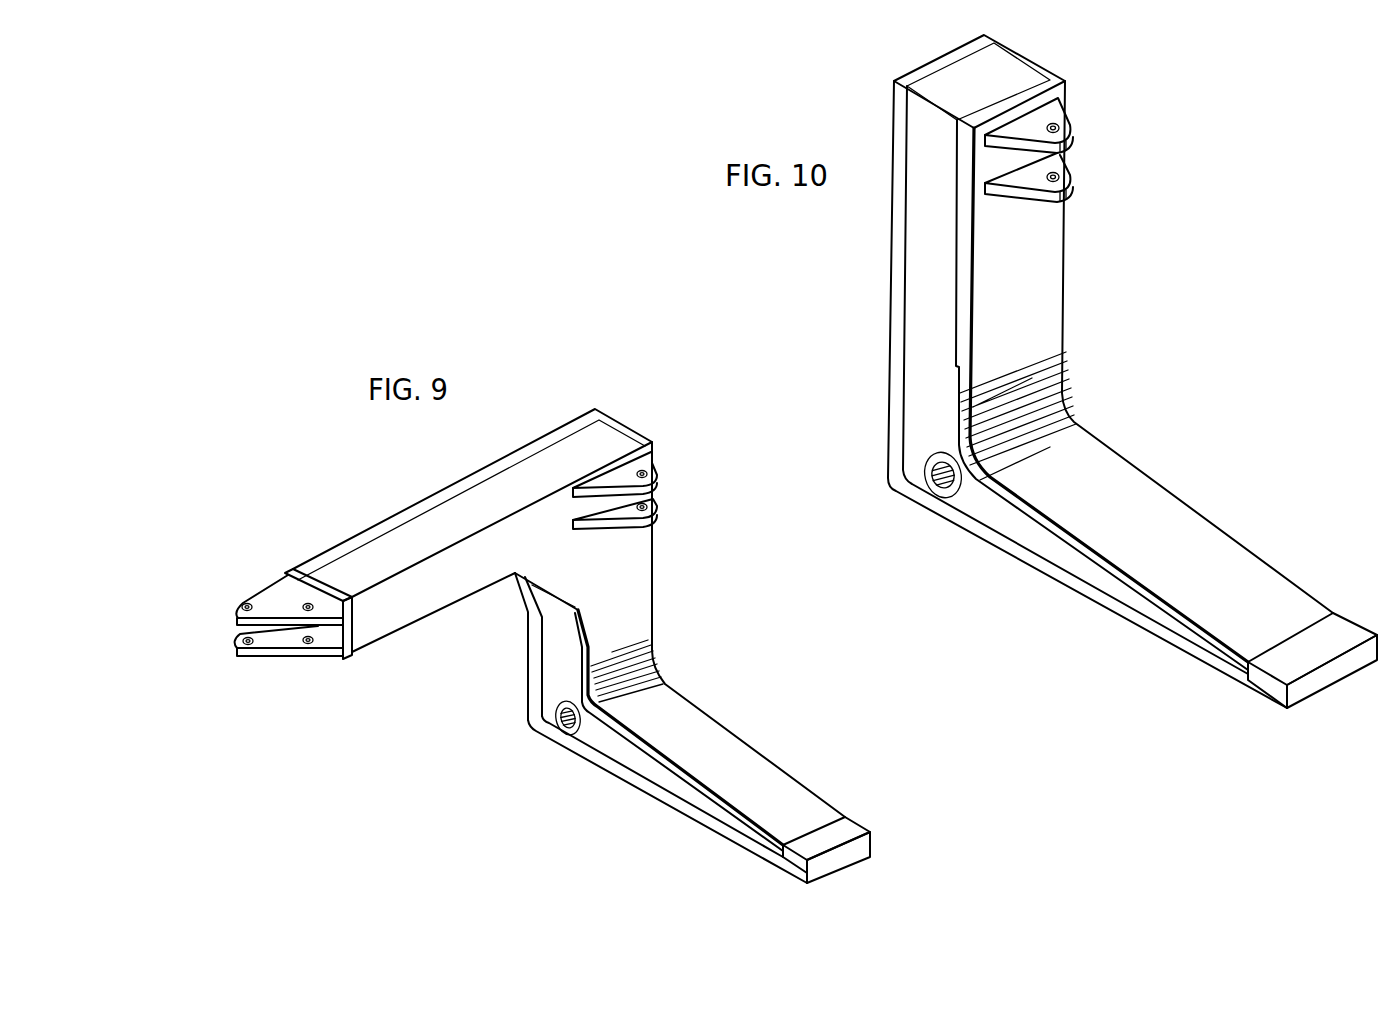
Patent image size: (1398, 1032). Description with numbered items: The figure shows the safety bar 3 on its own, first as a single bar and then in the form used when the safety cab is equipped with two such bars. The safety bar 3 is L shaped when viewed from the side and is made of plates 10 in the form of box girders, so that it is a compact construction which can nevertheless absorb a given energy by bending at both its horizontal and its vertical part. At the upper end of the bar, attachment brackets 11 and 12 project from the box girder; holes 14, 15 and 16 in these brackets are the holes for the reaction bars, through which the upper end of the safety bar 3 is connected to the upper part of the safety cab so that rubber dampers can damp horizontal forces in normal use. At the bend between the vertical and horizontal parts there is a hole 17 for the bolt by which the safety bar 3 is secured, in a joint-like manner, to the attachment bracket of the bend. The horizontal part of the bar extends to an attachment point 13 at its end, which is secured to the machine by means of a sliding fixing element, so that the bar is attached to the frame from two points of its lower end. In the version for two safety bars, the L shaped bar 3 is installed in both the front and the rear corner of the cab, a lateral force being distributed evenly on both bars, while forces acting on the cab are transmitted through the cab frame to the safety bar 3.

In FIG. 9, the safety bar 3 is at (675, 722).
In FIG. 10, the safety bar 3 is at (1097, 478).
In FIG. 9, the plates 10 is at (502, 478).
In FIG. 10, the plates 10 is at (970, 82).
In FIG. 9, the attachment bracket 11 is at (284, 642).
In FIG. 9, the attachment bracket 12 is at (657, 502).
In FIG. 10, the attachment bracket 12 is at (1067, 168).
In FIG. 9, the attachment point 13 is at (805, 850).
In FIG. 10, the attachment point 13 is at (1285, 663).
In FIG. 9, the hole for reaction bar 14 is at (248, 598).
In FIG. 9, the hole for reaction bar 15 is at (310, 598).
In FIG. 9, the hole for reaction bar 16 is at (655, 468).
In FIG. 10, the hole for reaction bar 16 is at (1057, 127).
In FIG. 9, the hole for bolt 17 is at (562, 731).
In FIG. 10, the hole for bolt 17 is at (932, 487).